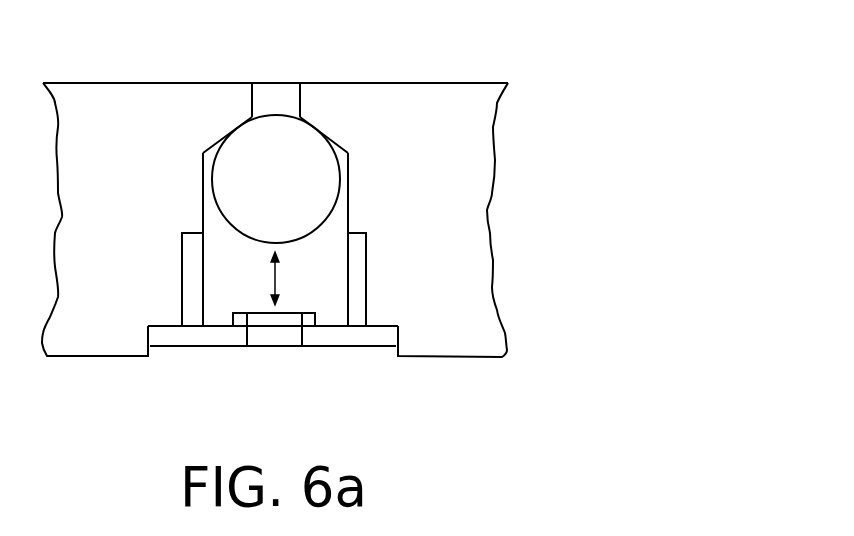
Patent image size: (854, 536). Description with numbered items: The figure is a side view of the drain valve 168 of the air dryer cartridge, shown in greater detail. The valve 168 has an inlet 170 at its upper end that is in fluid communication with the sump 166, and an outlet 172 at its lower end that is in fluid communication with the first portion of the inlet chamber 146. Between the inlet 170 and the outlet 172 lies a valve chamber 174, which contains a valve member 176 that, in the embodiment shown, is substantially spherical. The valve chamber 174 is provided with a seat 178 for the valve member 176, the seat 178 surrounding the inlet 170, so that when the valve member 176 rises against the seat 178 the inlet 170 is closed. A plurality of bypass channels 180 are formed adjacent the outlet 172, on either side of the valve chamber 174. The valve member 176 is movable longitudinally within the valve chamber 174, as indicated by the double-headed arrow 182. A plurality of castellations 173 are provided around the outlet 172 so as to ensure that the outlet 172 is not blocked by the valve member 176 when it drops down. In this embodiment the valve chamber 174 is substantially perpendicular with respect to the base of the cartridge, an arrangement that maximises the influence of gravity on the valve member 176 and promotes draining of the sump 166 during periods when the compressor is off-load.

The inlet chamber 146 is at (300, 442).
The sump 166 is at (167, 64).
The drain valve 168 is at (433, 62).
The inlet 170 is at (273, 88).
The outlet 172 is at (270, 347).
The castellations 173 is at (310, 313).
The valve chamber 174 is at (336, 222).
The valve member 176 is at (301, 193).
The seat 178 is at (340, 138).
The bypass channels 180 is at (182, 303).
The arrow 182 is at (272, 280).